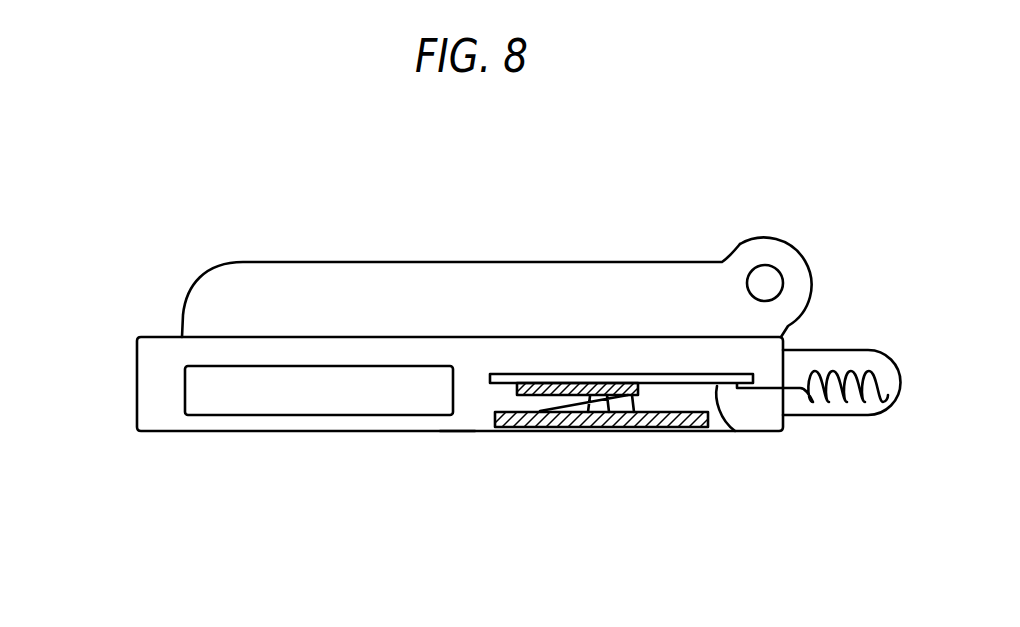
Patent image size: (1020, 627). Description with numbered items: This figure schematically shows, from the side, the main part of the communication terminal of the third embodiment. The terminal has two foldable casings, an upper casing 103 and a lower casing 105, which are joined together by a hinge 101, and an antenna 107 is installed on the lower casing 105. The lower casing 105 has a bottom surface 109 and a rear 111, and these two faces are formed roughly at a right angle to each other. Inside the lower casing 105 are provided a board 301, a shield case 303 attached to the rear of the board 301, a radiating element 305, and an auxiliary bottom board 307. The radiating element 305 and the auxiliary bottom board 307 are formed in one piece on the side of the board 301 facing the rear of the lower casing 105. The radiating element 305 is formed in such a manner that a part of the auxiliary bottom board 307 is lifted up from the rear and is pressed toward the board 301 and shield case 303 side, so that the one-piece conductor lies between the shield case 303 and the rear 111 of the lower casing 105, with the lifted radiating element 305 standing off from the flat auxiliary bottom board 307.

The hinge 101 is at (765, 283).
The upper casing 103 is at (450, 260).
The lower casing 105 is at (362, 431).
The antenna 107 is at (863, 352).
The bottom surface 109 is at (135, 420).
The rear 111 is at (457, 433).
The board 301 is at (735, 431).
The shield case 303 is at (632, 431).
The radiating element 305 is at (597, 431).
The auxiliary bottom board 307 is at (520, 431).